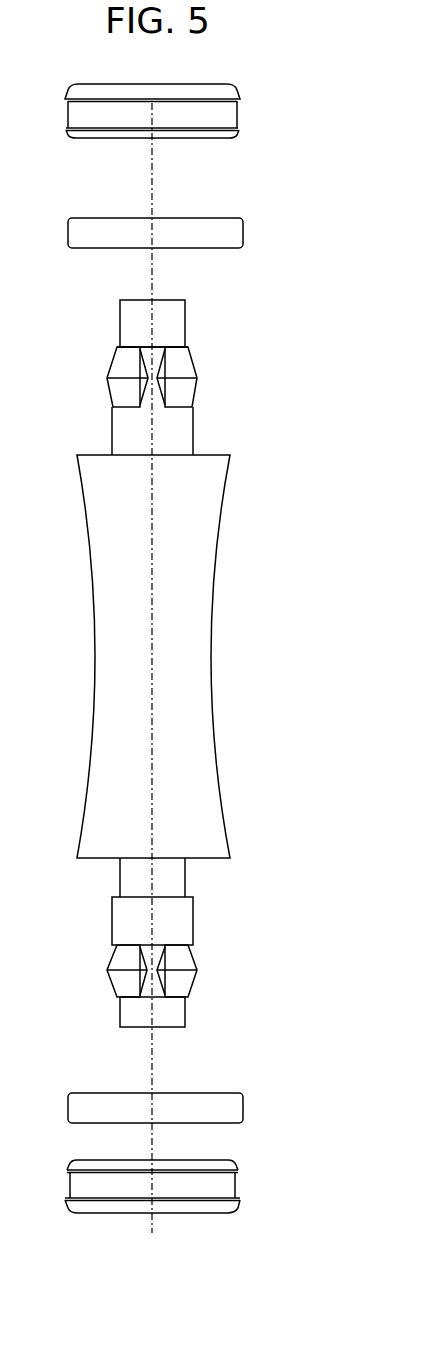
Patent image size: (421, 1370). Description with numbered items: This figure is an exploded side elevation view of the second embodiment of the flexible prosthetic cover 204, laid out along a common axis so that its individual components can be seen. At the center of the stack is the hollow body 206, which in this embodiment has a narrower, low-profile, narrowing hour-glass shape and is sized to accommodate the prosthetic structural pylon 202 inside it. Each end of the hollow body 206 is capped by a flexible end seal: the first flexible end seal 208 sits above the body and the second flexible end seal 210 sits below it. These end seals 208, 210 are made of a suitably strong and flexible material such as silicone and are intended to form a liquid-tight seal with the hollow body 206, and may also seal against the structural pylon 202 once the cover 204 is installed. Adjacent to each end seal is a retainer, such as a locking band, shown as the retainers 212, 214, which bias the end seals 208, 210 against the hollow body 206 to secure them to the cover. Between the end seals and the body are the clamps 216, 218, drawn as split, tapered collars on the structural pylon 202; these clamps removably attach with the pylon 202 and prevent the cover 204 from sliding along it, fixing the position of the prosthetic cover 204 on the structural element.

The prosthetic structural pylon 202 is at (182, 318).
The flexible prosthetic cover 204 is at (288, 515).
The hollow body 206 is at (208, 712).
The first flexible end seal 208 is at (232, 115).
The second flexible end seal 210 is at (228, 1190).
The retainer 212 is at (243, 232).
The retainer 214 is at (242, 1113).
The clamp 216 is at (188, 370).
The clamp 218 is at (188, 960).